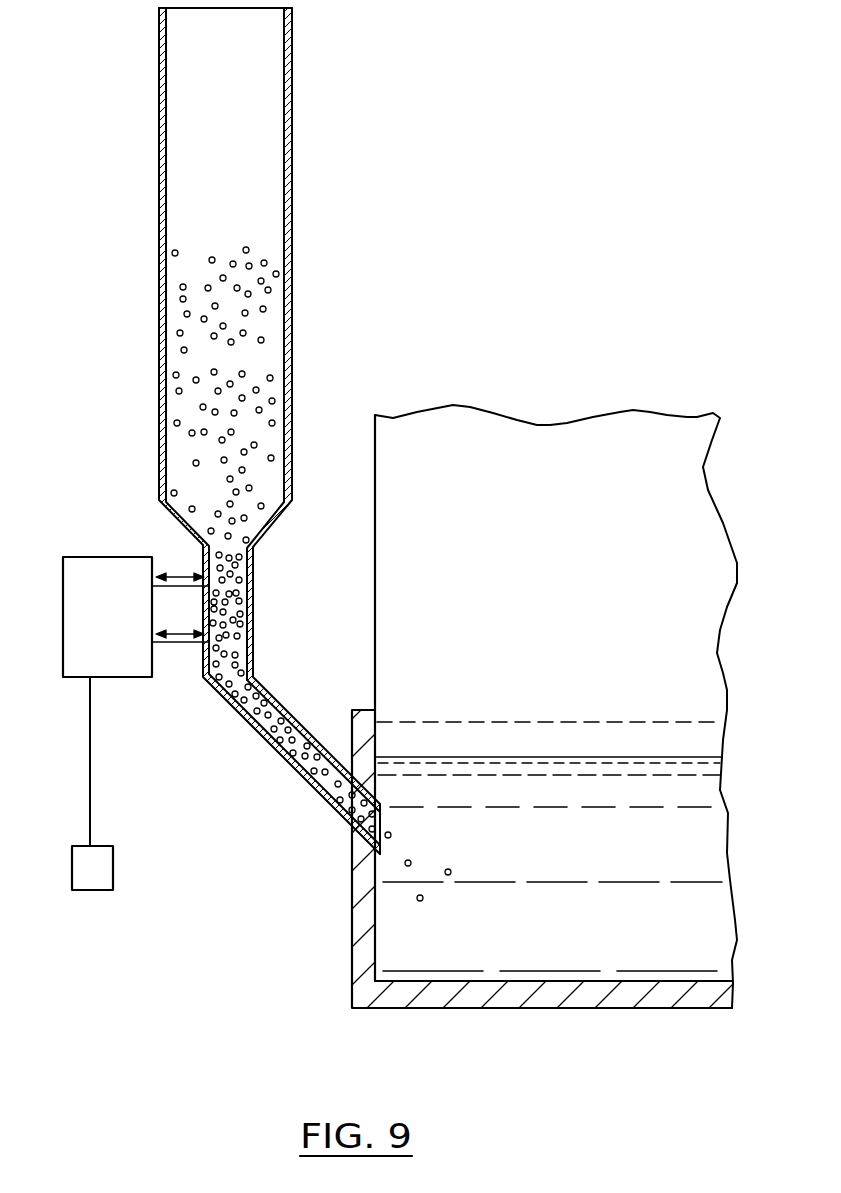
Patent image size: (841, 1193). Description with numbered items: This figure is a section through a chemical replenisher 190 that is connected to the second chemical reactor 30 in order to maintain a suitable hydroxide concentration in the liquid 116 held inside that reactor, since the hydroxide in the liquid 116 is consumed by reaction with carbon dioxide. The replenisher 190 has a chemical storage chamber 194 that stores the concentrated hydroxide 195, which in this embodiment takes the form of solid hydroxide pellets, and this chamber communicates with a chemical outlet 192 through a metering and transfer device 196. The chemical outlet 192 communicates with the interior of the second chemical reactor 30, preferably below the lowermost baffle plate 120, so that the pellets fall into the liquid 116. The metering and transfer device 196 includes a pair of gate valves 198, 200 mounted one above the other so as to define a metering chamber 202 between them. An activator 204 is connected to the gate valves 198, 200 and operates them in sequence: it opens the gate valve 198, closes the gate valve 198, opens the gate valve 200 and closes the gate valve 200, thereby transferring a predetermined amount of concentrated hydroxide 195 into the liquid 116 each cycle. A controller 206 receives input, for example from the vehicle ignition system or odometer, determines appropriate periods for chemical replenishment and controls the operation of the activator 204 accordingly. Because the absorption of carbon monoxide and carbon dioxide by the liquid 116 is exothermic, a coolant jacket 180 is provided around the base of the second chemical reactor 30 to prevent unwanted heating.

The second chemical reactor 30 is at (544, 742).
The liquid 116 is at (583, 858).
The lowermost baffle plate 120 is at (565, 722).
The coolant jacket 180 is at (630, 993).
The chemical replenisher 190 is at (292, 431).
The chemical outlet 192 is at (380, 819).
The chemical storage chamber 194 is at (293, 348).
The concentrated hydroxide 195 is at (270, 271).
The metering and transfer device 196 is at (107, 567).
The gate valve 198 is at (240, 579).
The gate valve 200 is at (243, 647).
The metering chamber 202 is at (250, 604).
The activator 204 is at (130, 636).
The controller 206 is at (105, 876).